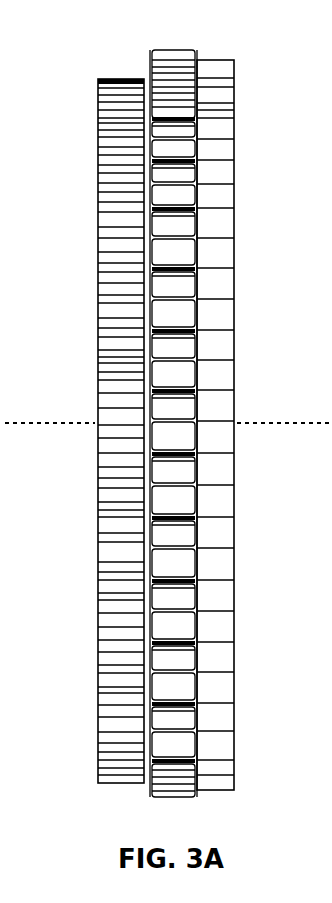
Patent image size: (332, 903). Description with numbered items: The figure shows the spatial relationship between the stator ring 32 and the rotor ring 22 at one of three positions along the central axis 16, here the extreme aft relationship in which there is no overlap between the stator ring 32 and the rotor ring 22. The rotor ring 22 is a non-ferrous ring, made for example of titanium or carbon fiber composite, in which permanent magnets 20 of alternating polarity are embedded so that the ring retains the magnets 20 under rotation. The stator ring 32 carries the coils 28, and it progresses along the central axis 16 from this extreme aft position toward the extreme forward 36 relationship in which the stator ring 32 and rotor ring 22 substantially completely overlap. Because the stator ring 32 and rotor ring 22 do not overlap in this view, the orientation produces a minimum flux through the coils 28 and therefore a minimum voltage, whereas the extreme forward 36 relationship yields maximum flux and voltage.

The central axis 16 is at (31, 416).
The permanent magnets 20 is at (118, 256).
The rotor ring 22 is at (80, 406).
The coils 28 is at (185, 252).
The stator ring 32 is at (227, 401).
The extreme forward relationship 36 is at (32, 621).